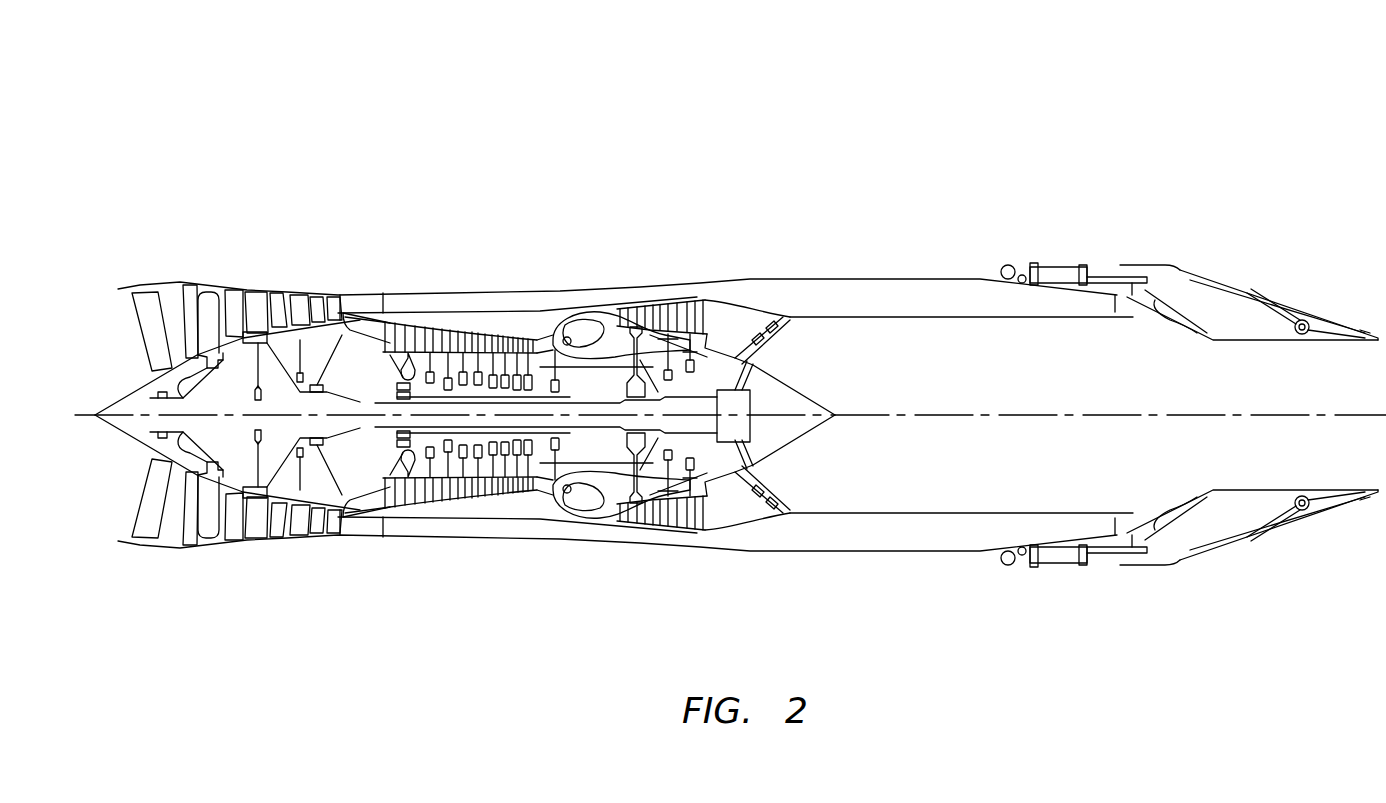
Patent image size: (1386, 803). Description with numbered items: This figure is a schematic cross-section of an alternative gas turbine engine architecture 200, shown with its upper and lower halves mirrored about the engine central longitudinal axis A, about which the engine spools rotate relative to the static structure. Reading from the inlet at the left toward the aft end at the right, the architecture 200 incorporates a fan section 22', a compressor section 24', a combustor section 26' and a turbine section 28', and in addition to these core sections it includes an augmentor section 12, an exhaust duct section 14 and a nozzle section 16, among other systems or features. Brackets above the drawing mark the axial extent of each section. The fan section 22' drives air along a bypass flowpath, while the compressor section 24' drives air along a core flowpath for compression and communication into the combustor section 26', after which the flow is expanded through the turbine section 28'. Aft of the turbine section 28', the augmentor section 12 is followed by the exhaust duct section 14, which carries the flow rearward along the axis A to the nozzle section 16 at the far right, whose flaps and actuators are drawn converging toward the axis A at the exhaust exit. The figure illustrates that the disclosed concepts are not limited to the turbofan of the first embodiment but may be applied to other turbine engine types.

The alternative engine architecture 200 is at (1035, 110).
The fan section 22' is at (242, 352).
The compressor section 24' is at (527, 348).
The combustor section 26' is at (615, 339).
The turbine section 28' is at (664, 345).
The augmentor section 12 is at (712, 215).
The exhaust duct section 14 is at (1123, 215).
The nozzle section 16 is at (1382, 215).
The engine central longitudinal axis A is at (1113, 418).